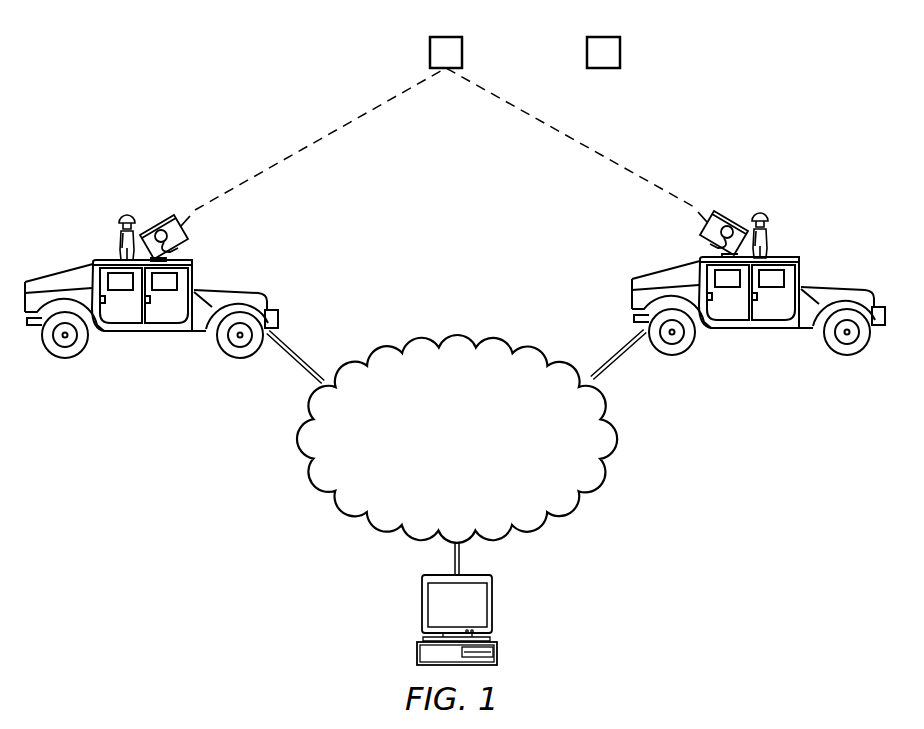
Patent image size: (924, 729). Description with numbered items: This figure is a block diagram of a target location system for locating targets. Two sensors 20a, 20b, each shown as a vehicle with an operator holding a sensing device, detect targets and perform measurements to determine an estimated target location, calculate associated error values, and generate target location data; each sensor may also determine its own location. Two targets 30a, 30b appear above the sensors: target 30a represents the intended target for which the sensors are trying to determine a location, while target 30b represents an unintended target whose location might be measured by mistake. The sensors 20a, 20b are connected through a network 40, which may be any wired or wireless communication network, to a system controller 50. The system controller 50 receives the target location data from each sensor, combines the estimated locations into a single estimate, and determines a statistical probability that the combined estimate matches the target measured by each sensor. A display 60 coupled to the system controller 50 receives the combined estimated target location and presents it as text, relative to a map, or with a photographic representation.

The sensor 20a is at (85, 266).
The sensor 20b is at (843, 287).
The target 30a is at (430, 53).
The target 30b is at (620, 53).
The network 40 is at (617, 440).
The system controller 50 is at (497, 652).
The display 60 is at (492, 600).